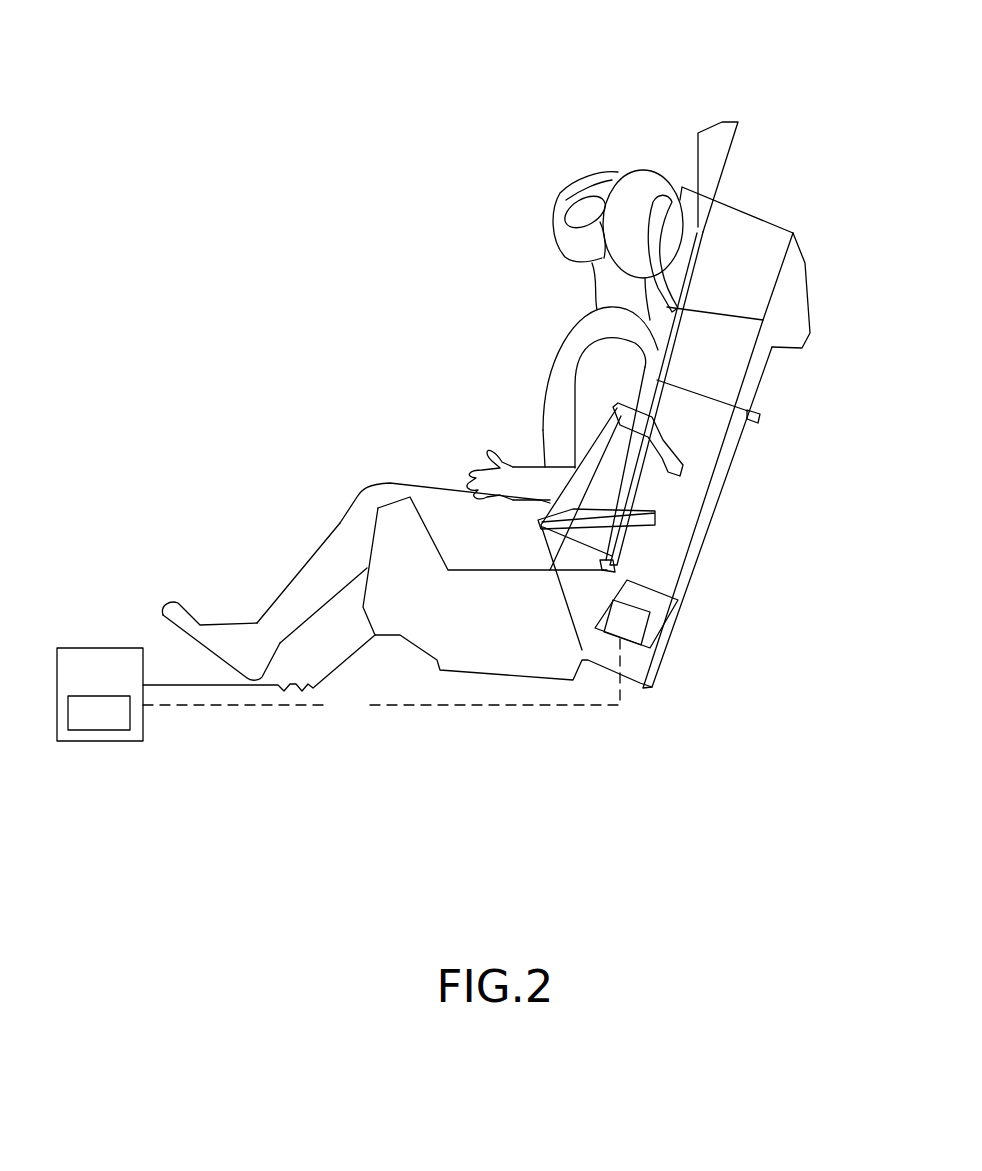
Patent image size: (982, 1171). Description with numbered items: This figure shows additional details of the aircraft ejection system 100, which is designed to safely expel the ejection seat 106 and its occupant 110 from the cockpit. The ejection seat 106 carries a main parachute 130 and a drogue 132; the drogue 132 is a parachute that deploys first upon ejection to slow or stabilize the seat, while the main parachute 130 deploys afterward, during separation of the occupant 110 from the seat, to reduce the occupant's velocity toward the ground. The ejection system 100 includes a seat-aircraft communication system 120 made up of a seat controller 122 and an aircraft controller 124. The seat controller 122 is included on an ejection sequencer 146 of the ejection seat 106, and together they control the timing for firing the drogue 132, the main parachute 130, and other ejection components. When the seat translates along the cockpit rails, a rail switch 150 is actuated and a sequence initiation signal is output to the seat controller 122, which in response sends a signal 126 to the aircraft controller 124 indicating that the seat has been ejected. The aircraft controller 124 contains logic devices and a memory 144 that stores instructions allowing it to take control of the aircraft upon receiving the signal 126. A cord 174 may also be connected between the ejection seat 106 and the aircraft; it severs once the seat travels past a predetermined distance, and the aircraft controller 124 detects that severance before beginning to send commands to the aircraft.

The aircraft ejection system 100 is at (500, 97).
The ejection seat 106 is at (703, 448).
The occupant 110 is at (548, 352).
The seat-aircraft communication system 120 is at (473, 715).
The seat controller 122 is at (633, 623).
The aircraft controller 124 is at (105, 667).
The signal 126 is at (381, 673).
The main parachute 130 is at (772, 262).
The drogue 132 is at (795, 320).
The memory 144 is at (99, 713).
The ejection sequencer 146 is at (657, 577).
The rail switch 150 is at (758, 413).
The cord 174 is at (350, 660).